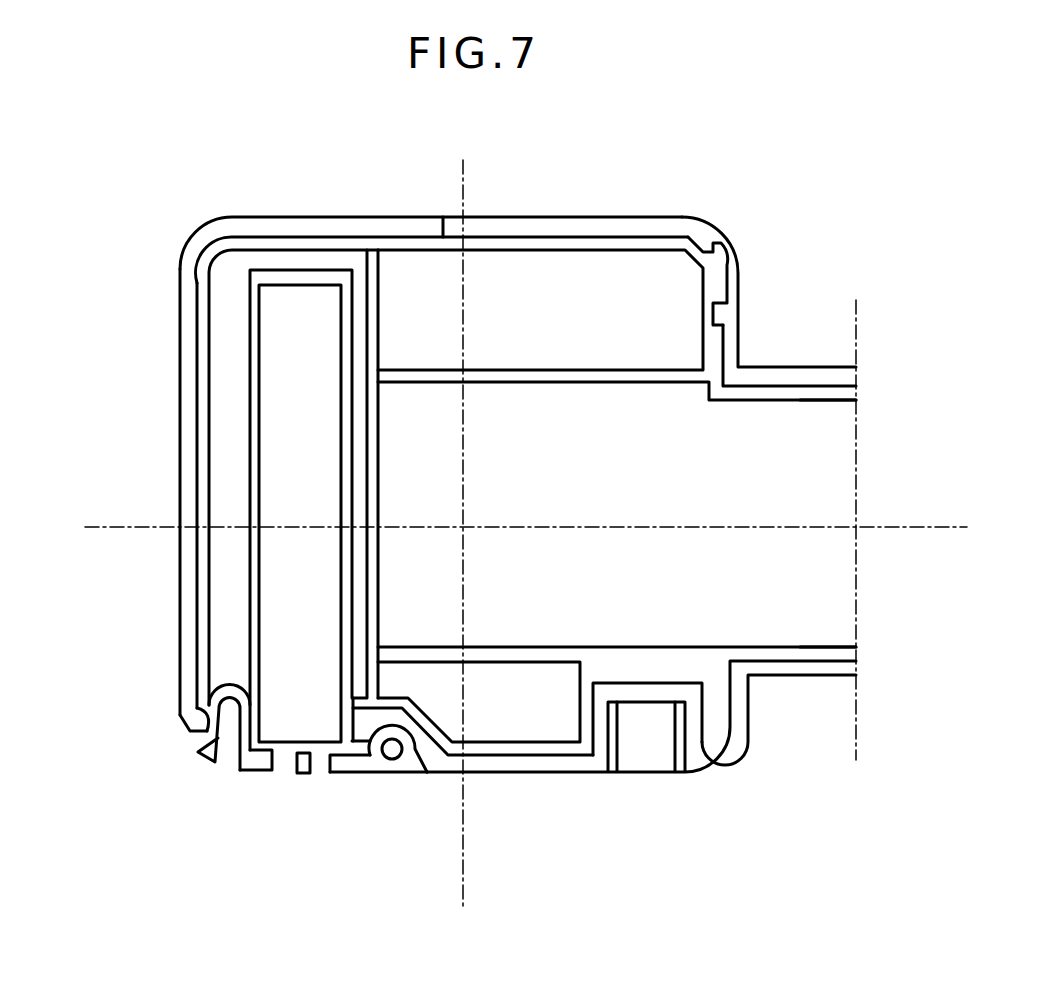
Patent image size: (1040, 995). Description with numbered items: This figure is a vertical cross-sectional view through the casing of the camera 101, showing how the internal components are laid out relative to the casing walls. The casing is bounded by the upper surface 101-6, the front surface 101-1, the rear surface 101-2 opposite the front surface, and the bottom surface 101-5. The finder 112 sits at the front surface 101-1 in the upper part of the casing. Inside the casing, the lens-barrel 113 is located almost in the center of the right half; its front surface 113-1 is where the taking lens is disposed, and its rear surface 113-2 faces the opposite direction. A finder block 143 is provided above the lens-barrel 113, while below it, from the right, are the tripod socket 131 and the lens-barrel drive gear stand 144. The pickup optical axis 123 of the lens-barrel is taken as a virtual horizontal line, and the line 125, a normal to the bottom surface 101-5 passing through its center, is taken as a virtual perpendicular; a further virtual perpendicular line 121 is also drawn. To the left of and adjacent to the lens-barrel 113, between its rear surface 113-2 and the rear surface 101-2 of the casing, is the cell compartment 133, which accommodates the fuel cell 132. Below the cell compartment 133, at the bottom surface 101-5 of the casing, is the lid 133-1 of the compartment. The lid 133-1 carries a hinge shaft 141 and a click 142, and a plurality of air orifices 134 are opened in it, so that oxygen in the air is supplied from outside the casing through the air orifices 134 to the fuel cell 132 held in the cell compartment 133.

The camera 101 is at (672, 840).
The front surface 101-1 is at (742, 337).
The rear surface 101-2 is at (177, 480).
The bottom surface 101-5 is at (502, 775).
The upper surface 101-6 is at (397, 218).
The finder 112 is at (738, 272).
The lens-barrel 113 is at (838, 458).
The front surface of the lens-barrel 113-1 is at (856, 600).
The rear surface of the lens-barrel 113-2 is at (382, 583).
The virtual perpendicular line 121 is at (856, 516).
The pickup optical axis 123 is at (554, 528).
The normal to the bottom surface 125 is at (461, 516).
The tripod socket 131 is at (680, 750).
The fuel cell 132 is at (295, 305).
The cell compartment 133 is at (270, 275).
The lid 133-1 is at (345, 763).
The air orifices 134 is at (283, 765).
The hinge shaft 141 is at (392, 760).
The click 142 is at (213, 760).
The finder block 143 is at (510, 270).
The lens-barrel drive gear stand 144 is at (532, 720).